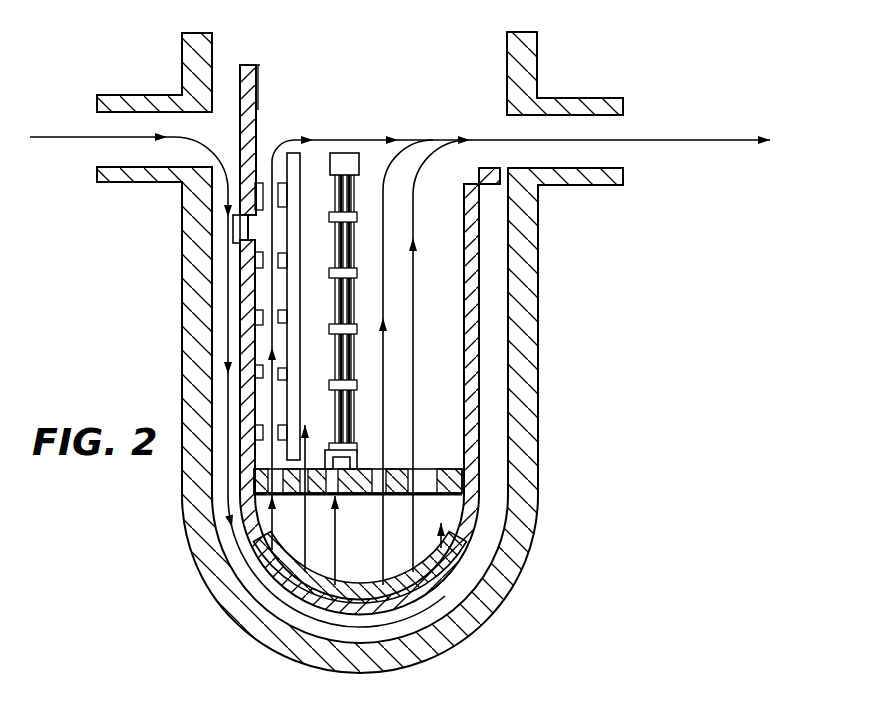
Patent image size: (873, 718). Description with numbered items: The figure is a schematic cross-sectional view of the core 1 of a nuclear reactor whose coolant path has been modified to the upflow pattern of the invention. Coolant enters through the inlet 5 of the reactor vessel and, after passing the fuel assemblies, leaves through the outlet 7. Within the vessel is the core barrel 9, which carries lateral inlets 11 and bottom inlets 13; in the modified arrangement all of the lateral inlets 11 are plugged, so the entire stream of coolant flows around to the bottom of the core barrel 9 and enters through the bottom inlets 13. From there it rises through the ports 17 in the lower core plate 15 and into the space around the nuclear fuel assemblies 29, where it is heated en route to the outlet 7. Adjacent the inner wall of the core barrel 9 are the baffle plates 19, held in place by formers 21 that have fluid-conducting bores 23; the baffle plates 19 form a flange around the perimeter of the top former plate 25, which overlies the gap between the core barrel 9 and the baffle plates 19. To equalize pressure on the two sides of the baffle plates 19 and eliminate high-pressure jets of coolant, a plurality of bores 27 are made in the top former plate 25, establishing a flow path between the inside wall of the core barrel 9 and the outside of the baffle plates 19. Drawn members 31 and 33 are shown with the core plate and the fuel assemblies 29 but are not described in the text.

The core 1 is at (312, 50).
The inlet 5 is at (95, 121).
The outlet 7 is at (616, 156).
The core barrel 9 is at (245, 328).
The lateral inlets 11 is at (247, 243).
The bottom inlets 13 is at (345, 620).
The lower core plate 15 is at (450, 468).
The ports 17 is at (303, 497).
The baffle plates 19 is at (292, 150).
The formers 21 is at (288, 258).
The fluid-conducting bores 23 is at (265, 312).
The top former plate 25 is at (287, 197).
The bores 27 is at (263, 190).
The nuclear fuel assemblies 29 is at (345, 237).
The plate 31 is at (366, 466).
The head block 33 is at (345, 158).